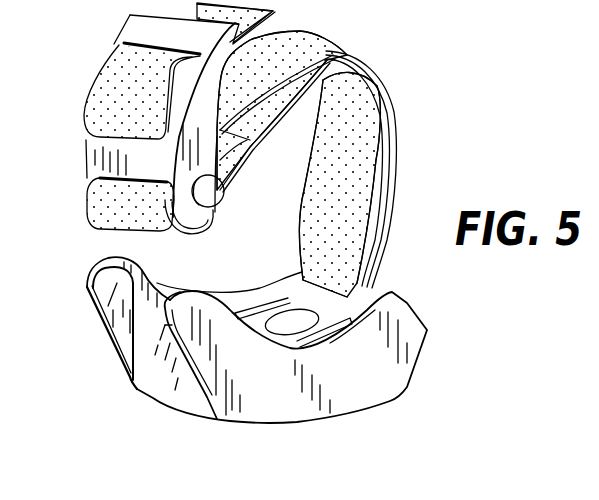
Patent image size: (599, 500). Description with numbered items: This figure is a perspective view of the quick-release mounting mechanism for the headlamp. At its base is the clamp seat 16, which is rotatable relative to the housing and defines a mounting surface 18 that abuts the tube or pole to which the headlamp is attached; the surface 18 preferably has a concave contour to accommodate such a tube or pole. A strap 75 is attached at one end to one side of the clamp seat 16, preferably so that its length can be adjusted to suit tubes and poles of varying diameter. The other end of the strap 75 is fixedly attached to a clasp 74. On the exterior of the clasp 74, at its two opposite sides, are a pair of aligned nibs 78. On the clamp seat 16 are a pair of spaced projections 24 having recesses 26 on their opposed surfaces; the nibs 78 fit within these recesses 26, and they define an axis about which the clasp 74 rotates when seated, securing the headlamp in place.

The clamp seat 16 is at (270, 400).
The mounting surface 18 is at (343, 310).
The spaced projections 24 is at (113, 258).
The recesses 26 is at (107, 323).
The clasp 74 is at (167, 32).
The strap 75 is at (330, 47).
The nibs 78 is at (208, 191).